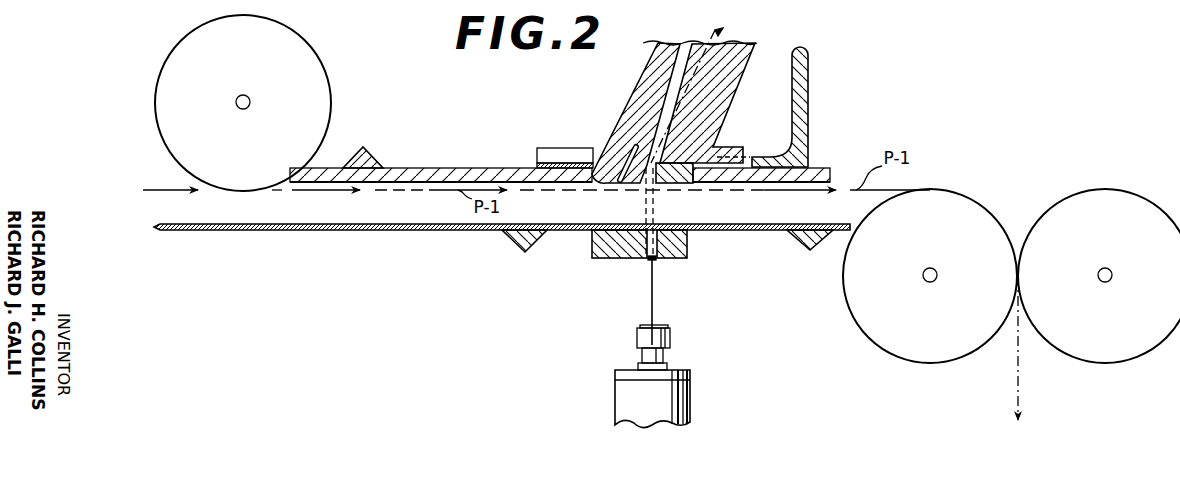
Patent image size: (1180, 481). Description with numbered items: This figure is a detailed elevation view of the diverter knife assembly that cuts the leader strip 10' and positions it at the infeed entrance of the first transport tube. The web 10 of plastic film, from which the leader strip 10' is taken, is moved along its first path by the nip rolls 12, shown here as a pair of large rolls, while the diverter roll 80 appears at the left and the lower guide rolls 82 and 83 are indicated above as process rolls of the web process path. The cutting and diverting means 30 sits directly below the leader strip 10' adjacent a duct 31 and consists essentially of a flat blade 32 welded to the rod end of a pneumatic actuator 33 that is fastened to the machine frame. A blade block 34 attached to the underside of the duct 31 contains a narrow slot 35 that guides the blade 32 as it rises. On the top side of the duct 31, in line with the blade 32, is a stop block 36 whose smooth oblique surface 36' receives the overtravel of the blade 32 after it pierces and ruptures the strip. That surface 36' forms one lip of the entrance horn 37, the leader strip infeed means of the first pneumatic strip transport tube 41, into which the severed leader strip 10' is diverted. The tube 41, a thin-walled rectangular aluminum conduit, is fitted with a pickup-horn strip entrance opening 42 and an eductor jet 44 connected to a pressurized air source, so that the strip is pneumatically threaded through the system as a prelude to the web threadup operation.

The web 10 is at (607, 305).
The leader strip 10' is at (673, 131).
The nip rolls 12 is at (919, 309).
The cutting and diverting means 30 is at (622, 331).
The duct 31 is at (416, 217).
The flat blade 32 is at (651, 294).
The pneumatic actuator 33 is at (662, 408).
The blade block 34 is at (592, 247).
The narrow slot 35 is at (650, 261).
The stop block 36 is at (726, 200).
The smooth oblique surface 36' is at (705, 130).
The entrance horn 37 is at (629, 188).
The pneumatic strip transport tube 41 is at (631, 100).
The strip entrance opening 42 is at (646, 189).
The eductor jet 44 is at (770, 0).
The diverter roll 80 is at (255, 136).
The lower guide roll 82 is at (936, 0).
The lower guide roll 83 is at (651, 0).